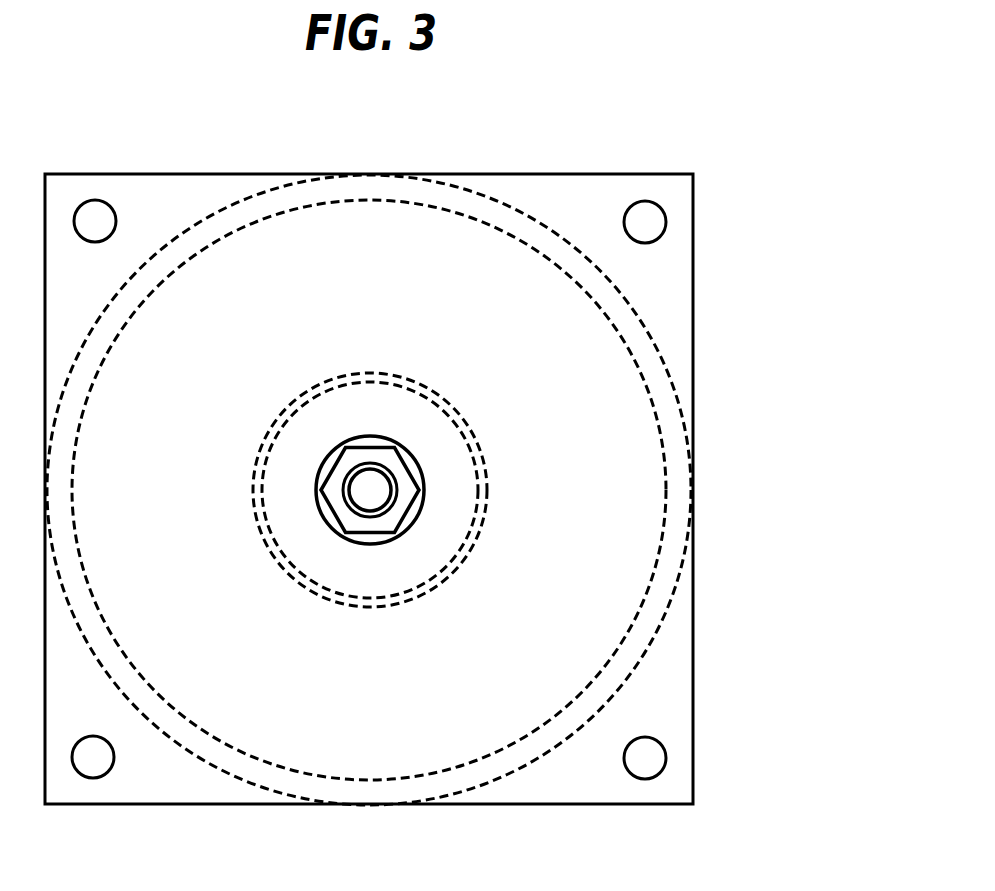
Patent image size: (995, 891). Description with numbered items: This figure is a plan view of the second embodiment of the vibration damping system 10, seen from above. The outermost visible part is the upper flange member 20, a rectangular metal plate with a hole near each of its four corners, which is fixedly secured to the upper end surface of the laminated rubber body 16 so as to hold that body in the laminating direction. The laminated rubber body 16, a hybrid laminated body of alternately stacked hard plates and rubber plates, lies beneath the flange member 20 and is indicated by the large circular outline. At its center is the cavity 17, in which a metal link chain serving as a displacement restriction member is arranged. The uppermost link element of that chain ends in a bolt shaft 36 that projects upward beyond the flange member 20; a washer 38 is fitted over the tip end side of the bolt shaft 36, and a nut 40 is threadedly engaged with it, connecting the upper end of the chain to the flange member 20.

The vibration damping system 10 is at (631, 143).
The flange member 20 is at (546, 193).
The laminated rubber body 16 is at (530, 762).
The cavity 17 is at (405, 591).
The washer 38 is at (423, 469).
The nut 40 is at (327, 510).
The bolt shaft 36 is at (363, 514).